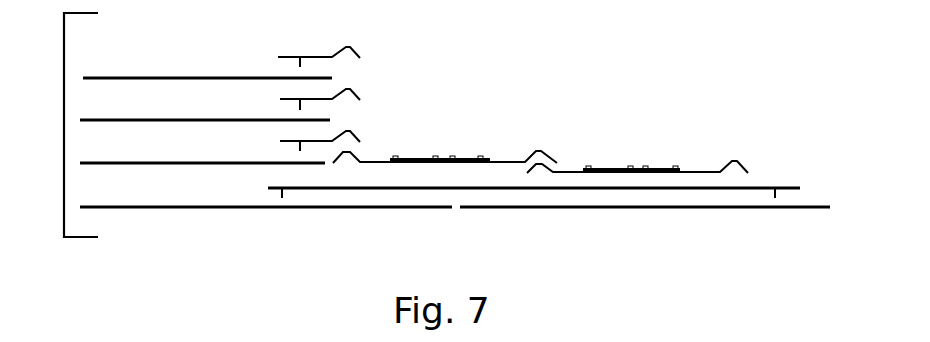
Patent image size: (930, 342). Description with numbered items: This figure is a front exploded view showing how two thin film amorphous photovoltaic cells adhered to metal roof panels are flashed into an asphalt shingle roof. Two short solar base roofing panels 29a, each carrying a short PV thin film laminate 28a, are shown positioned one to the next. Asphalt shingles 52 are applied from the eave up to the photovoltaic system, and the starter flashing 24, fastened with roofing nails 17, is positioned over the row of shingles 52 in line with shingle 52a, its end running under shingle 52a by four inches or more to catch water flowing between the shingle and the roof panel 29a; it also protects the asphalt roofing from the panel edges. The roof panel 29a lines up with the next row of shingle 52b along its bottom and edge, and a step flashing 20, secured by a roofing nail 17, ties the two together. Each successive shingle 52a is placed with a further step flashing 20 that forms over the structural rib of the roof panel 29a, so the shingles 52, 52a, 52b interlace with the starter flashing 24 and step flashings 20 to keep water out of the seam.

The roofing nail 17 is at (298, 67).
The step flashing 20 is at (353, 47).
The starter flashing 24 is at (768, 183).
The short PV thin film laminate 28a is at (452, 156).
The short solar base roofing panel 29a is at (543, 150).
The asphalt shingle 52 is at (117, 209).
The asphalt shingle 52a is at (117, 77).
The asphalt shingle 52b is at (110, 119).